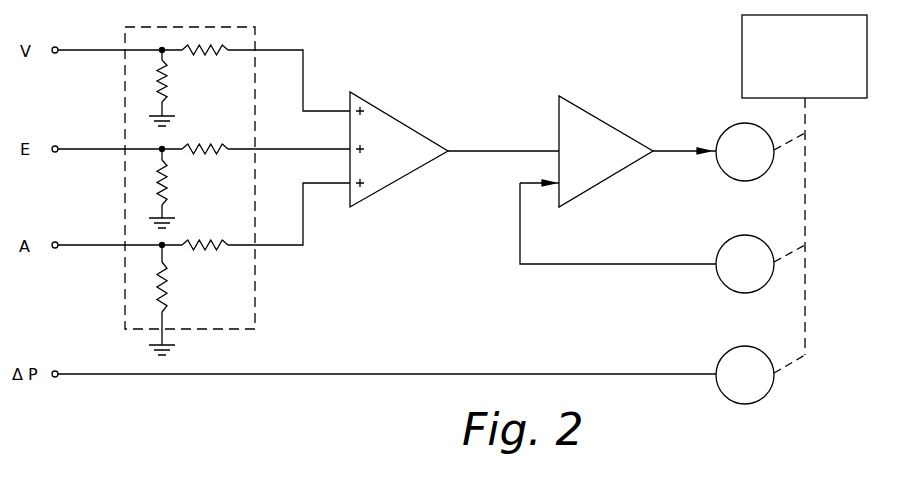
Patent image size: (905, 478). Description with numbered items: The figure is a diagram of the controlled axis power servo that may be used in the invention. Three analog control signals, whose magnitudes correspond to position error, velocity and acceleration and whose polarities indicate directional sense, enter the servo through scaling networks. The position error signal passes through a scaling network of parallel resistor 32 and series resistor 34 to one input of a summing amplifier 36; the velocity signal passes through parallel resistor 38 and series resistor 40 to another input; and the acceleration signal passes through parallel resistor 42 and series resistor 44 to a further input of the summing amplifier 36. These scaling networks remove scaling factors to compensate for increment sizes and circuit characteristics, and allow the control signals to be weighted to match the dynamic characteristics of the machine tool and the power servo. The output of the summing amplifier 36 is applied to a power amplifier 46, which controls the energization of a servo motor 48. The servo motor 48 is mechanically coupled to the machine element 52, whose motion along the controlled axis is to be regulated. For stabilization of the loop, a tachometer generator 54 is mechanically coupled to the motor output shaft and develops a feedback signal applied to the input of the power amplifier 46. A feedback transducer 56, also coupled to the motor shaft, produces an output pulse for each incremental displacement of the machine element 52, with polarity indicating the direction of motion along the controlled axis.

The parallel resistor 32 is at (165, 177).
The series resistor 34 is at (203, 147).
The summing amplifier 36 is at (408, 150).
The parallel resistor 38 is at (165, 83).
The series resistor 40 is at (237, 47).
The parallel resistor 42 is at (165, 298).
The series resistor 44 is at (196, 240).
The power amplifier 46 is at (575, 120).
The servo motor 48 is at (736, 131).
The machine element 52 is at (745, 28).
The tachometer generator 54 is at (722, 247).
The feedback transducer 56 is at (738, 357).